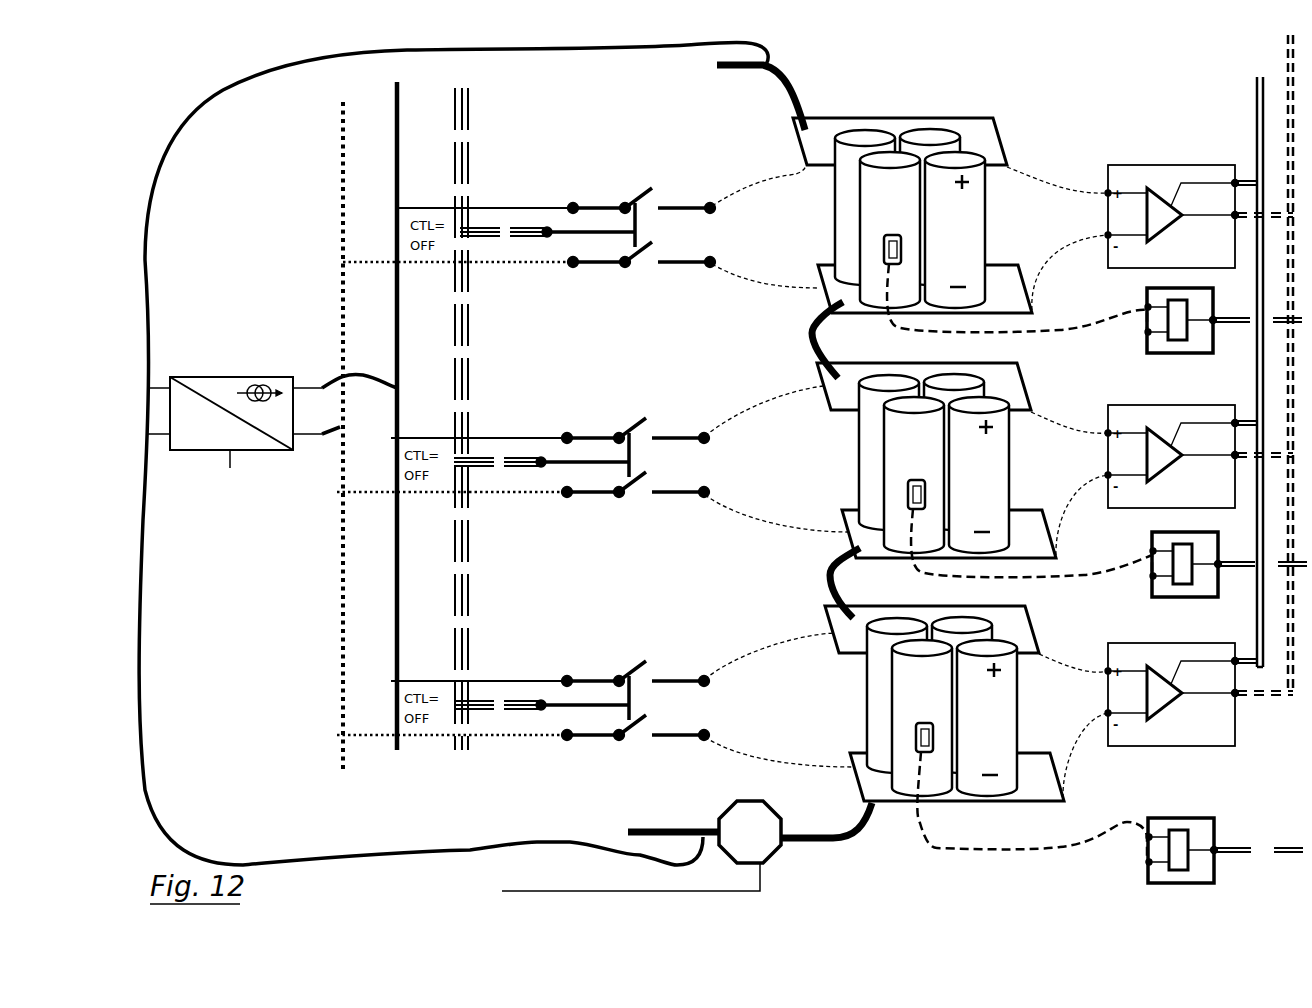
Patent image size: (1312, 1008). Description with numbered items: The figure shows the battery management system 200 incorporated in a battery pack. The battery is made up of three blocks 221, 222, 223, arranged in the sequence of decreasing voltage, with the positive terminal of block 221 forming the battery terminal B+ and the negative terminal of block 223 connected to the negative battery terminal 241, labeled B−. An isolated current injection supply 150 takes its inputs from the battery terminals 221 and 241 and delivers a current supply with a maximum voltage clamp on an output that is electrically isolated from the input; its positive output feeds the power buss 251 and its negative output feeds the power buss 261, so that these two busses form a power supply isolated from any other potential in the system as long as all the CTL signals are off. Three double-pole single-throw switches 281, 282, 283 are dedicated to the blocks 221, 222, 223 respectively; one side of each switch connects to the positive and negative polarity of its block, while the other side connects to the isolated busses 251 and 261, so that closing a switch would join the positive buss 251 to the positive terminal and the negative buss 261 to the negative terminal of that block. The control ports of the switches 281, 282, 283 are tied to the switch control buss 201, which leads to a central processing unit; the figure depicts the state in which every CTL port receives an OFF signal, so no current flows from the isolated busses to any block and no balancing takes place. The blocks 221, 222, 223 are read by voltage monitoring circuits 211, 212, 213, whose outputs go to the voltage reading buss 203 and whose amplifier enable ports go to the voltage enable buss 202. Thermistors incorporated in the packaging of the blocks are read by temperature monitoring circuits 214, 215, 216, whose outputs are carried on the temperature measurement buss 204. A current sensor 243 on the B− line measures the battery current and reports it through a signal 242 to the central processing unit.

The system 200 is at (158, 82).
The isolated current injection supply 150 is at (215, 368).
The power buss 261 is at (330, 120).
The power buss 251 is at (400, 145).
The switch control buss 201 is at (480, 152).
The DPST switch 281 is at (610, 182).
The DPST switch 282 is at (597, 423).
The DPST switch 283 is at (585, 668).
The block 221 is at (867, 100).
The block 222 is at (835, 495).
The block 223 is at (857, 723).
The voltage monitoring circuit 211 is at (1125, 152).
The voltage monitoring circuit 212 is at (1130, 390).
The voltage monitoring circuit 213 is at (1172, 645).
The temperature monitoring circuit 214 is at (1142, 295).
The temperature monitoring circuit 215 is at (1153, 540).
The temperature monitoring circuit 216 is at (1163, 812).
The voltage enable buss 202 is at (1248, 68).
The voltage reading buss 203 is at (1260, 703).
The temperature measurement buss 204 is at (1311, 887).
The negative battery terminal 241 is at (615, 838).
The signal 242 is at (608, 880).
The current sensor 243 is at (782, 863).